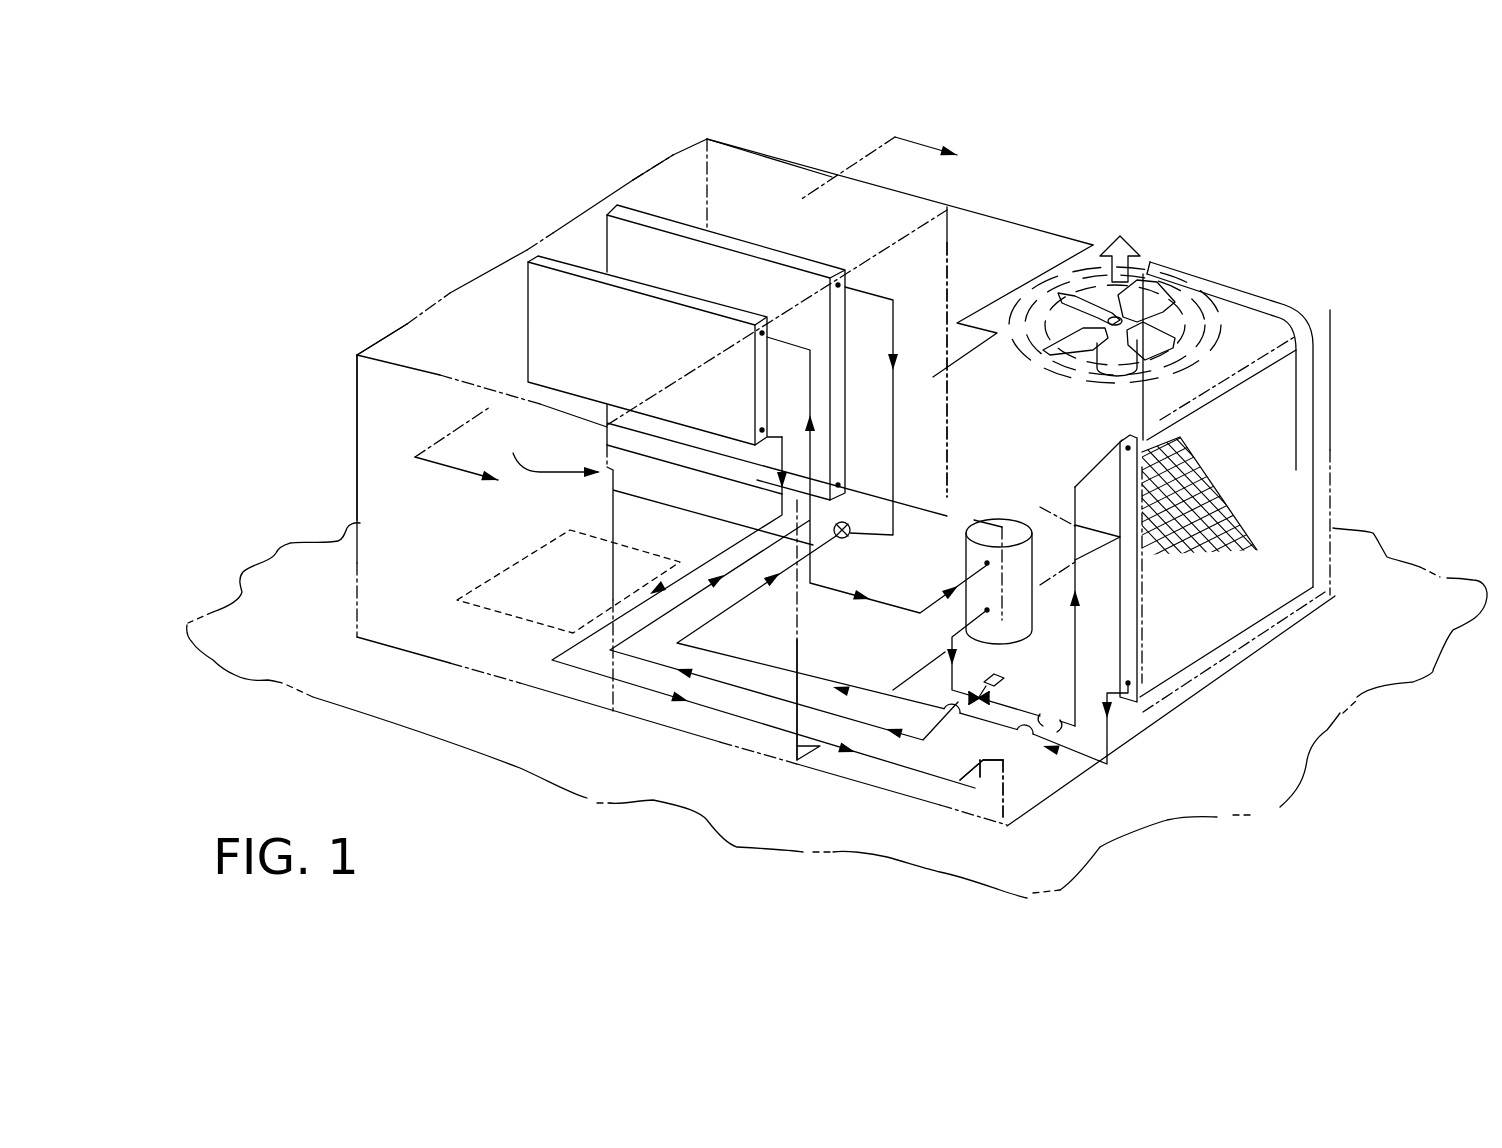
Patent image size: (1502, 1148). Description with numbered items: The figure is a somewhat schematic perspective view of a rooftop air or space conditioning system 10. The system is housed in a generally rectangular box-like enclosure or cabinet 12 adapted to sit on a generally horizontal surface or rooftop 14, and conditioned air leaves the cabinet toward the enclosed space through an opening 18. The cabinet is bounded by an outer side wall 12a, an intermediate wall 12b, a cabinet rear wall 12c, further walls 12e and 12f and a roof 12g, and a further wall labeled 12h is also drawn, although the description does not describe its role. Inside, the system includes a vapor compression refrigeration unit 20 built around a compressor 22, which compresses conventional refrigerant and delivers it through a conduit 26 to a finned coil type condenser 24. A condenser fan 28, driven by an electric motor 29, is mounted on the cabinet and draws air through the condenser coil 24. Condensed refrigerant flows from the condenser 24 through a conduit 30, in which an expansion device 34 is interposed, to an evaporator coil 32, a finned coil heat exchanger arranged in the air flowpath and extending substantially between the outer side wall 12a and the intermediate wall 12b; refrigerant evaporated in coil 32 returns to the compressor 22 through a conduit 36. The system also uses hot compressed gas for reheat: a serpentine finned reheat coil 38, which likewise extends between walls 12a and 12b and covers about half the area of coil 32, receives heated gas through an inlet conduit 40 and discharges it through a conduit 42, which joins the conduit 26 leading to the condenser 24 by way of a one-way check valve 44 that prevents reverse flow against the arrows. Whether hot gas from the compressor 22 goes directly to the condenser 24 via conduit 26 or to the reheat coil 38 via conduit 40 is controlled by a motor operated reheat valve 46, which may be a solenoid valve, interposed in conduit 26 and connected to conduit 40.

The space conditioning system 10 is at (1108, 192).
The enclosure or cabinet 12 is at (466, 284).
The outer side wall 12a is at (688, 170).
The intermediate wall 12b is at (945, 255).
The cabinet rear wall 12c is at (760, 178).
The wall 12e is at (398, 403).
The wall 12f is at (1020, 775).
The roof 12g is at (427, 343).
The enclosure inner panel 12h is at (822, 718).
The horizontal surface or rooftop 14 is at (1288, 805).
The opening 18 is at (523, 607).
The vapor compression refrigeration unit 20 is at (551, 451).
The compressor 22 is at (1024, 470).
The condenser 24 is at (1218, 276).
The conduit 26 is at (1078, 637).
The condenser fan 28 is at (1037, 297).
The electric motor 29 is at (1113, 377).
The conduit 30 is at (1074, 762).
The evaporator coil 32 is at (646, 208).
The expansion device 34 is at (848, 540).
The conduit 36 is at (888, 296).
The reheat coil 38 is at (573, 258).
The inlet conduit 40 is at (652, 650).
The conduit 42 is at (713, 700).
The check valve 44 is at (990, 793).
The reheat valve 46 is at (981, 694).